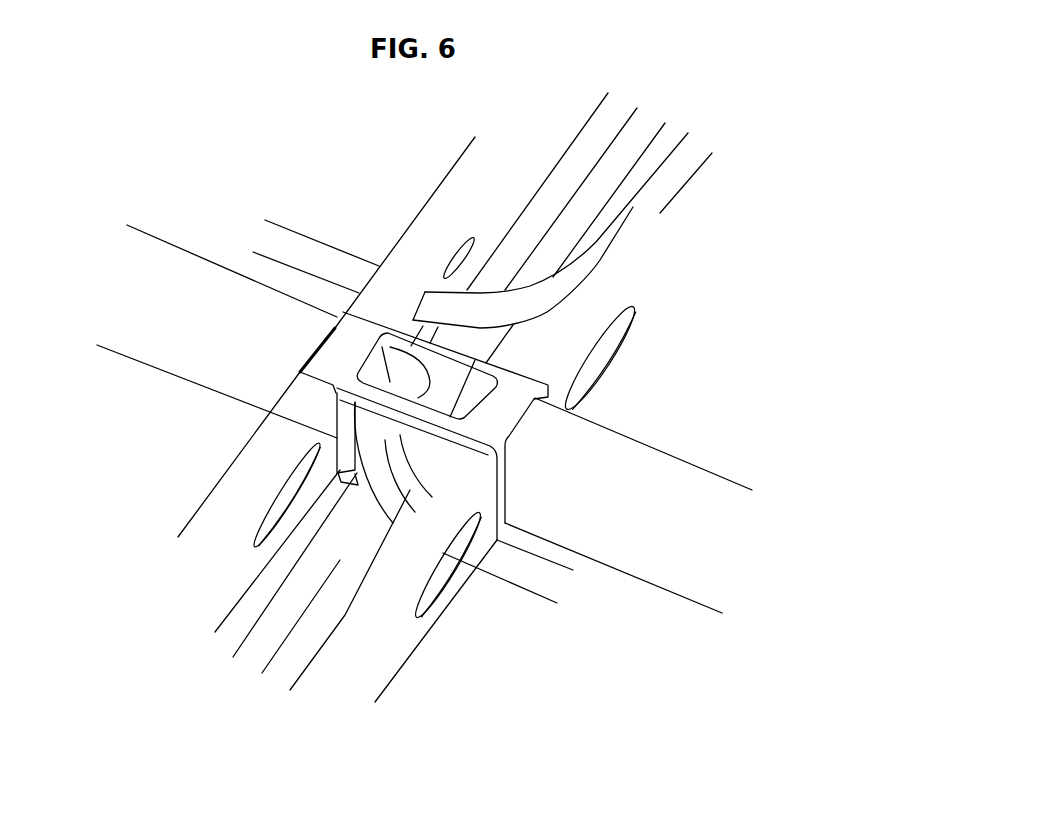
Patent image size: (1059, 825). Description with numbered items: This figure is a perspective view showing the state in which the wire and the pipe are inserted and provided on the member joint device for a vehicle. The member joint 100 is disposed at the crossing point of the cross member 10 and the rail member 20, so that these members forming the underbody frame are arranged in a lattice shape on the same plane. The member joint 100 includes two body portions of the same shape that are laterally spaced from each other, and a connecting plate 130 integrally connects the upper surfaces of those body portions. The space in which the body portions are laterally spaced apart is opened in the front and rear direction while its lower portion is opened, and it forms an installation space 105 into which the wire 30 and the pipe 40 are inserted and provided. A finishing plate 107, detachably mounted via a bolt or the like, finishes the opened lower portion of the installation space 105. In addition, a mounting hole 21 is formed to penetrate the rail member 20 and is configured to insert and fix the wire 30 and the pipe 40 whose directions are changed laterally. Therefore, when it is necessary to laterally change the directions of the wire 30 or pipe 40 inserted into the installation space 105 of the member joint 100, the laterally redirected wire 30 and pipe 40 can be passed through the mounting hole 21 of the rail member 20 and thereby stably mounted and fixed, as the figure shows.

The cross member 10 is at (152, 352).
The rail member 20 is at (467, 178).
The mounting hole 21 is at (447, 273).
The wire 30 is at (300, 253).
The pipe 40 is at (293, 617).
The member joint 100 is at (333, 330).
The installation space 105 is at (352, 412).
The finishing plate 107 is at (347, 480).
The connecting plate 130 is at (357, 330).